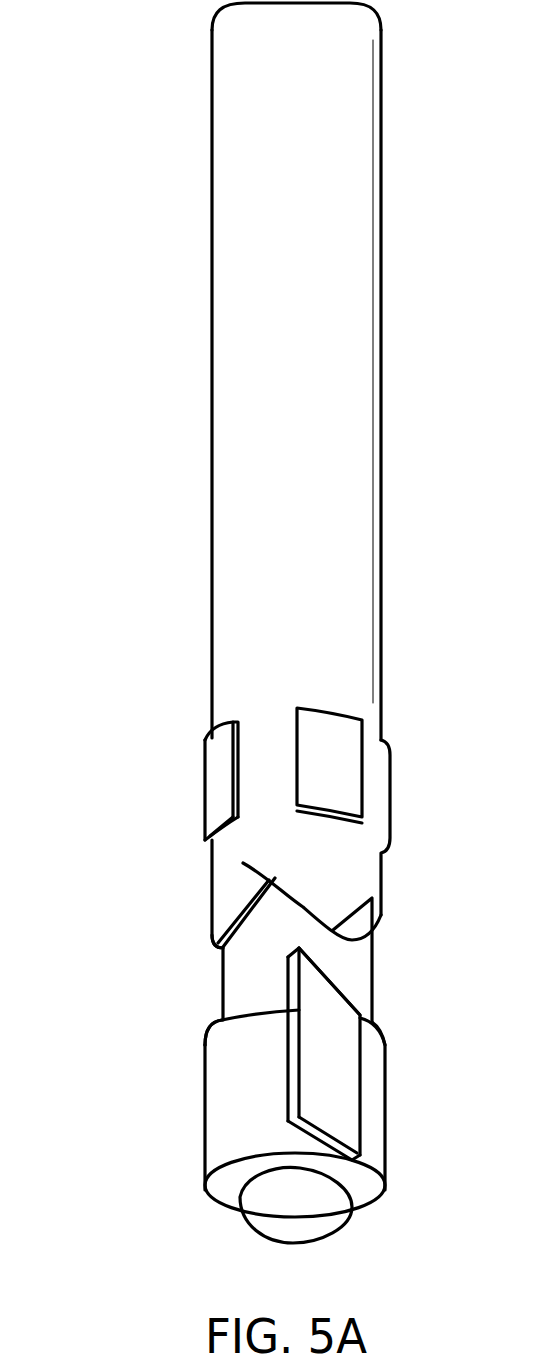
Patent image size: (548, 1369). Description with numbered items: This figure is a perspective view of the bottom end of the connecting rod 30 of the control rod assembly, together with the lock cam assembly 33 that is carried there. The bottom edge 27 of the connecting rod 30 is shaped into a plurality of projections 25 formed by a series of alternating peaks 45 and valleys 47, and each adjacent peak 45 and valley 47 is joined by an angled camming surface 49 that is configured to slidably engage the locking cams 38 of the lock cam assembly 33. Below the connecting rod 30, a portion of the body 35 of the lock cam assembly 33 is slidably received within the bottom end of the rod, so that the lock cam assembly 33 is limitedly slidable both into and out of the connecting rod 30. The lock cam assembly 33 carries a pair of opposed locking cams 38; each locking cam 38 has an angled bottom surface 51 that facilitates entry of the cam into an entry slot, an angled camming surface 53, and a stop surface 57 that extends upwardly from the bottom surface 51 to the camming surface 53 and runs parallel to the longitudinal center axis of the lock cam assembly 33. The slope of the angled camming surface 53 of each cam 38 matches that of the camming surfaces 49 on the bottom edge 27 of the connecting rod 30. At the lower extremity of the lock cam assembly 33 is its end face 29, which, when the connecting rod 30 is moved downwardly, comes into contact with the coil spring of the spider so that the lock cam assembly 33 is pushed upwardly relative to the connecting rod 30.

The connecting rod 30 is at (192, 338).
The angled bottom surface 51 is at (218, 772).
The valley 47 is at (243, 863).
The bottom edge 27 is at (323, 893).
The angled camming surface 49 is at (287, 890).
The peak 45 is at (381, 936).
The locking cam 38 is at (333, 1087).
The angled camming surface 53 is at (333, 982).
The lock cam assembly 33 is at (170, 1205).
The end face 29 is at (370, 1195).
The stop surface 57 is at (290, 1072).
The projection 25 is at (195, 970).
The body 35 is at (405, 993).